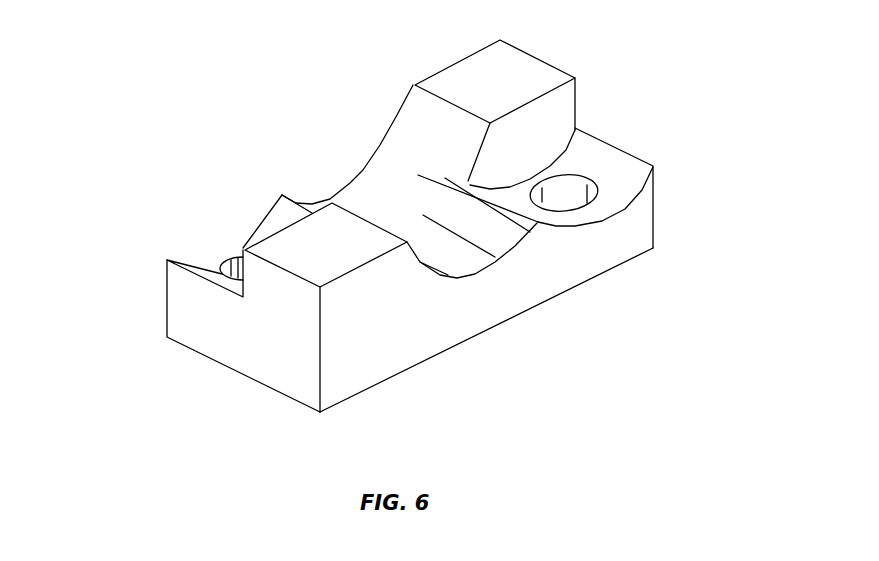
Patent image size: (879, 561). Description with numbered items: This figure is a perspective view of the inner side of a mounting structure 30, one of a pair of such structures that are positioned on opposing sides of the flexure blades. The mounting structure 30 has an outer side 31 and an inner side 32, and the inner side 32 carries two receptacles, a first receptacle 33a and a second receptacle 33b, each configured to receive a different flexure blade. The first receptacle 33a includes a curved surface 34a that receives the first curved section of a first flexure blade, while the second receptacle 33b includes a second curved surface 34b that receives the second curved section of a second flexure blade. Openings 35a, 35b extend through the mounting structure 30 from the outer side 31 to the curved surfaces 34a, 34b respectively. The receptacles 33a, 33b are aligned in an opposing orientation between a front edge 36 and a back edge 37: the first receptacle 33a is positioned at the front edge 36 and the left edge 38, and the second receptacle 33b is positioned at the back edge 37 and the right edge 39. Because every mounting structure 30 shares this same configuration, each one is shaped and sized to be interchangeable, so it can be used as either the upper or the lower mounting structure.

The mounting structure 30 is at (148, 370).
The outer side 31 is at (532, 310).
The inner side 32 is at (545, 80).
The first receptacle 33a is at (600, 148).
The second receptacle 33b is at (222, 206).
The curved surface 34a is at (592, 220).
The second curved surface 34b is at (225, 258).
The opening 35a is at (573, 190).
The opening 35b is at (230, 262).
The front edge 36 is at (388, 343).
The back edge 37 is at (165, 315).
The left edge 38 is at (655, 222).
The right edge 39 is at (285, 363).